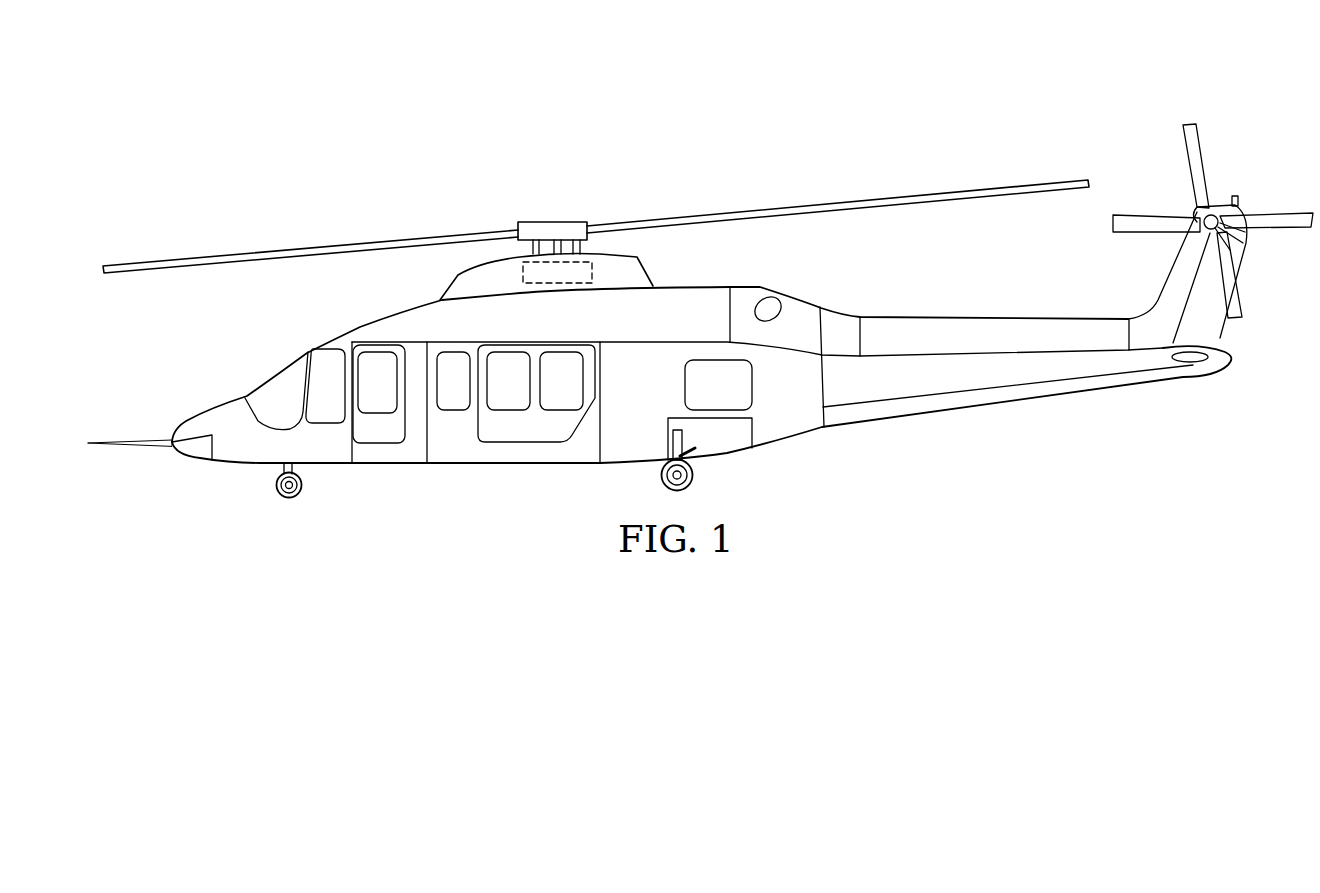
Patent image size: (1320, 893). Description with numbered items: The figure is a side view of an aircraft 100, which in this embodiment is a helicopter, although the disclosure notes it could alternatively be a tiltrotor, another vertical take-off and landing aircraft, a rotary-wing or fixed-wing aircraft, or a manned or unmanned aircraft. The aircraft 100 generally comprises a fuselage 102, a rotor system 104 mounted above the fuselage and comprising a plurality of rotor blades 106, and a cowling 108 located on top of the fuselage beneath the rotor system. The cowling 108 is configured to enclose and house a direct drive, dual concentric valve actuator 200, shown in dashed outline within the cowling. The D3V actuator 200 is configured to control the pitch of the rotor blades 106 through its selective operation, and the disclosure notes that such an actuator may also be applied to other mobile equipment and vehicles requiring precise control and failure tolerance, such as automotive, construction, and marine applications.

The aircraft 100 is at (305, 121).
The fuselage 102 is at (237, 464).
The rotor system 104 is at (552, 220).
The rotor blades 106 is at (290, 248).
The cowling 108 is at (645, 273).
The direct drive, dual concentric valve actuator 200 is at (593, 275).